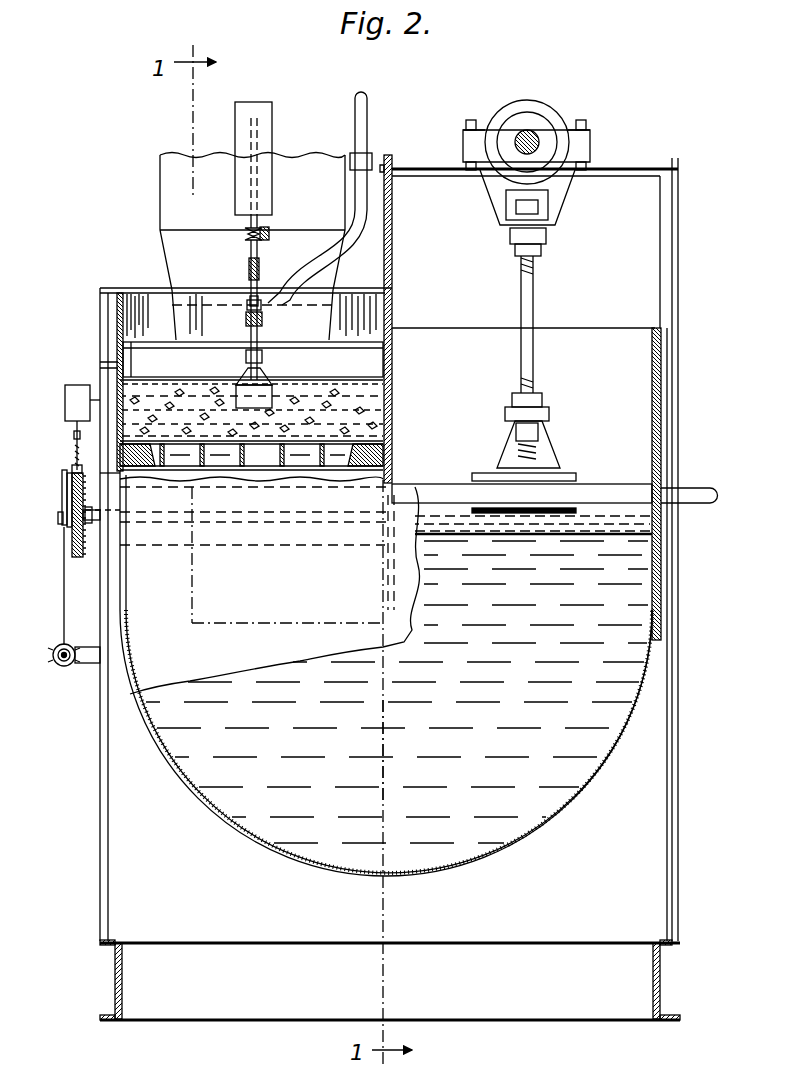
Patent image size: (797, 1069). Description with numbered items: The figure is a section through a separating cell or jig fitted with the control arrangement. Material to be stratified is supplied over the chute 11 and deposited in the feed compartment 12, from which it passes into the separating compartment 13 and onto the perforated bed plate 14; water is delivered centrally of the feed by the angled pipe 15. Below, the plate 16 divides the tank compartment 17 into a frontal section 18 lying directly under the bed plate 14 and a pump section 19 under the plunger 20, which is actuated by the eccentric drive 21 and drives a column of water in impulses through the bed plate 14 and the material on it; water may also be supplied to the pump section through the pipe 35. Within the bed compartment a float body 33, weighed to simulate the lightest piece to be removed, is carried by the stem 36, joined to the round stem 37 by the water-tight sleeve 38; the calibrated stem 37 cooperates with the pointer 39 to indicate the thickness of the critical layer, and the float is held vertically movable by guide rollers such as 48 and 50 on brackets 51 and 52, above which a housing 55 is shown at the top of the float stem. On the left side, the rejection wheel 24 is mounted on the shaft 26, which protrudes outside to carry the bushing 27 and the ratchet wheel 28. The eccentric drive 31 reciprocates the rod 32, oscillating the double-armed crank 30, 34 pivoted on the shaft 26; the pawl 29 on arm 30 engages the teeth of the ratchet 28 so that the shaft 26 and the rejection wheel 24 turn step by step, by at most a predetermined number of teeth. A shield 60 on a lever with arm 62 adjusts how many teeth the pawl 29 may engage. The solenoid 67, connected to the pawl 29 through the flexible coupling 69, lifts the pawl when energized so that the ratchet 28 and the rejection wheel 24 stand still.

The chute 11 is at (172, 176).
The feed compartment 12 is at (117, 353).
The separating compartment 13 is at (253, 359).
The perforated bed plate 14 is at (251, 455).
The pipe 15 is at (368, 108).
The plate 16 is at (410, 572).
The tank compartment 17 is at (396, 750).
The frontal section 18 is at (251, 478).
The pump section 19 is at (398, 679).
The plunger 20 is at (597, 490).
The eccentric drive 21 is at (537, 120).
The rejection wheel 24 is at (248, 545).
The shaft 26 is at (305, 540).
The bushing 27 is at (93, 524).
The ratchet wheel 28 is at (74, 554).
The pawl 29 is at (74, 468).
The crank arm 30 is at (62, 478).
The eccentric drive 31 is at (64, 662).
The rod 32 is at (64, 590).
The float body 33 is at (292, 388).
The crank arm 34 is at (62, 507).
The pipe 35 is at (700, 492).
The stem 36 is at (262, 380).
The round stem 37 is at (250, 322).
The water-tight sleeve 38 is at (262, 350).
The pointer 39 is at (248, 270).
The guide roller 48 is at (250, 300).
The guide roller 50 is at (248, 232).
The bracket 51 is at (290, 316).
The bracket 52 is at (268, 232).
The housing 55 is at (263, 108).
The shield 60 is at (82, 477).
The arm 62 is at (70, 538).
The solenoid 67 is at (68, 398).
The flexible coupling 69 is at (74, 442).